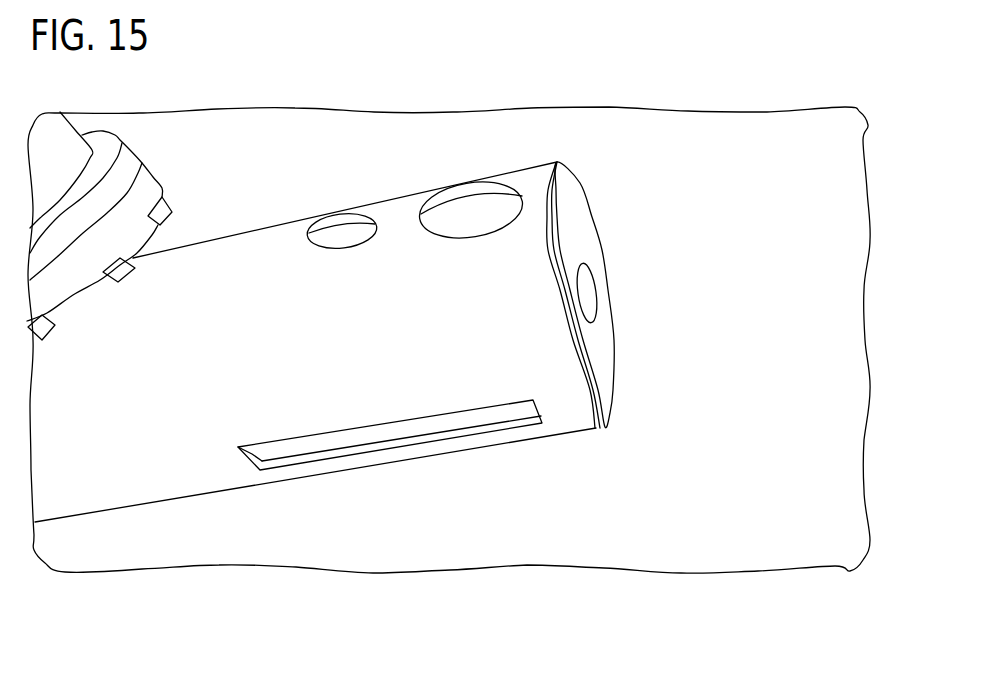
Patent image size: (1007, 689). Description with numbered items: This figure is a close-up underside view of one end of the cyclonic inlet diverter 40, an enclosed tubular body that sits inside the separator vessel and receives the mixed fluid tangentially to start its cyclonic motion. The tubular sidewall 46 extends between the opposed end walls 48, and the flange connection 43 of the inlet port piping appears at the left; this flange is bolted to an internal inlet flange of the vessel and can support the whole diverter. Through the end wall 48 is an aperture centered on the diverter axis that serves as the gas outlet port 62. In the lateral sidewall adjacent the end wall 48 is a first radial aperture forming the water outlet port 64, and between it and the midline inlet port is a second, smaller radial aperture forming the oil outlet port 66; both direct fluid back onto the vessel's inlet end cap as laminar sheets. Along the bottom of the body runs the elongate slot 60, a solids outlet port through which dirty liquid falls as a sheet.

The cyclonic inlet diverter 40 is at (385, 330).
The flange connection 43 is at (68, 280).
The tubular sidewall 46 is at (285, 348).
The end wall 48 is at (573, 223).
The slot 60 is at (433, 423).
The gas outlet port 62 is at (587, 295).
The water outlet port 64 is at (475, 222).
The oil outlet port 66 is at (343, 240).